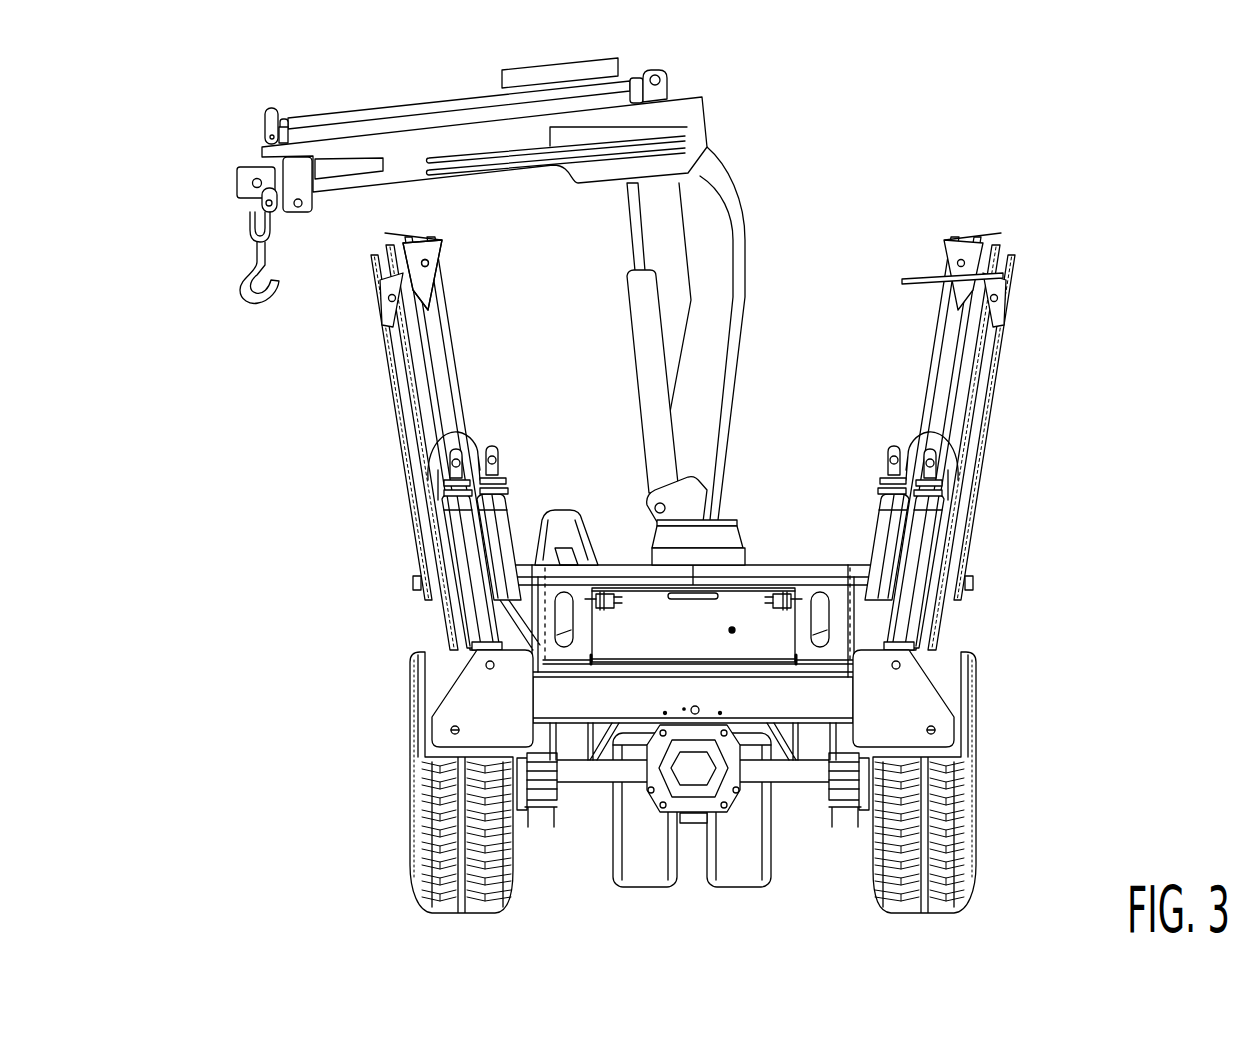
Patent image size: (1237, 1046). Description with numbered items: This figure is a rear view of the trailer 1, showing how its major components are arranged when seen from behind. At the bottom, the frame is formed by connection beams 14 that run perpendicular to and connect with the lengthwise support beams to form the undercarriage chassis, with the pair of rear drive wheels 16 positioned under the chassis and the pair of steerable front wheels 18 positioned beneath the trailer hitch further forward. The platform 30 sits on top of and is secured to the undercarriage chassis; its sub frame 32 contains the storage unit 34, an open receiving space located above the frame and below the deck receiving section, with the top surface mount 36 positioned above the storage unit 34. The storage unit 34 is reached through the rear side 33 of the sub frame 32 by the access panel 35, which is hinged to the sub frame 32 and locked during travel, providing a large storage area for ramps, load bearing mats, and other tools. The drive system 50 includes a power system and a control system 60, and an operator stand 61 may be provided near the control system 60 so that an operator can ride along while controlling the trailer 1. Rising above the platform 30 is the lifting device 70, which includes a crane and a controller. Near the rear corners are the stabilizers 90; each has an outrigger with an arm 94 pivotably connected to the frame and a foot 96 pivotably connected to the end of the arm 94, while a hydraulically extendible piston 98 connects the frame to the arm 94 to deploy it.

The trailer 1 is at (1168, 162).
The connection beams 14 is at (588, 790).
The rear drive wheels 16 is at (985, 860).
The steerable front wheels 18 is at (745, 890).
The platform 30 is at (970, 560).
The sub frame 32 is at (555, 655).
The rear side 33 is at (835, 645).
The storage unit 34 is at (905, 690).
The access panel 35 is at (805, 665).
The top surface mount 36 is at (975, 585).
The drive system 50 is at (648, 890).
The control system 60 is at (652, 522).
The operator stand 61 is at (553, 515).
The lifting device 70 is at (773, 140).
The stabilizers 90 is at (344, 441).
The arm 94 is at (410, 467).
The foot 96 is at (373, 292).
The piston 98 is at (412, 582).